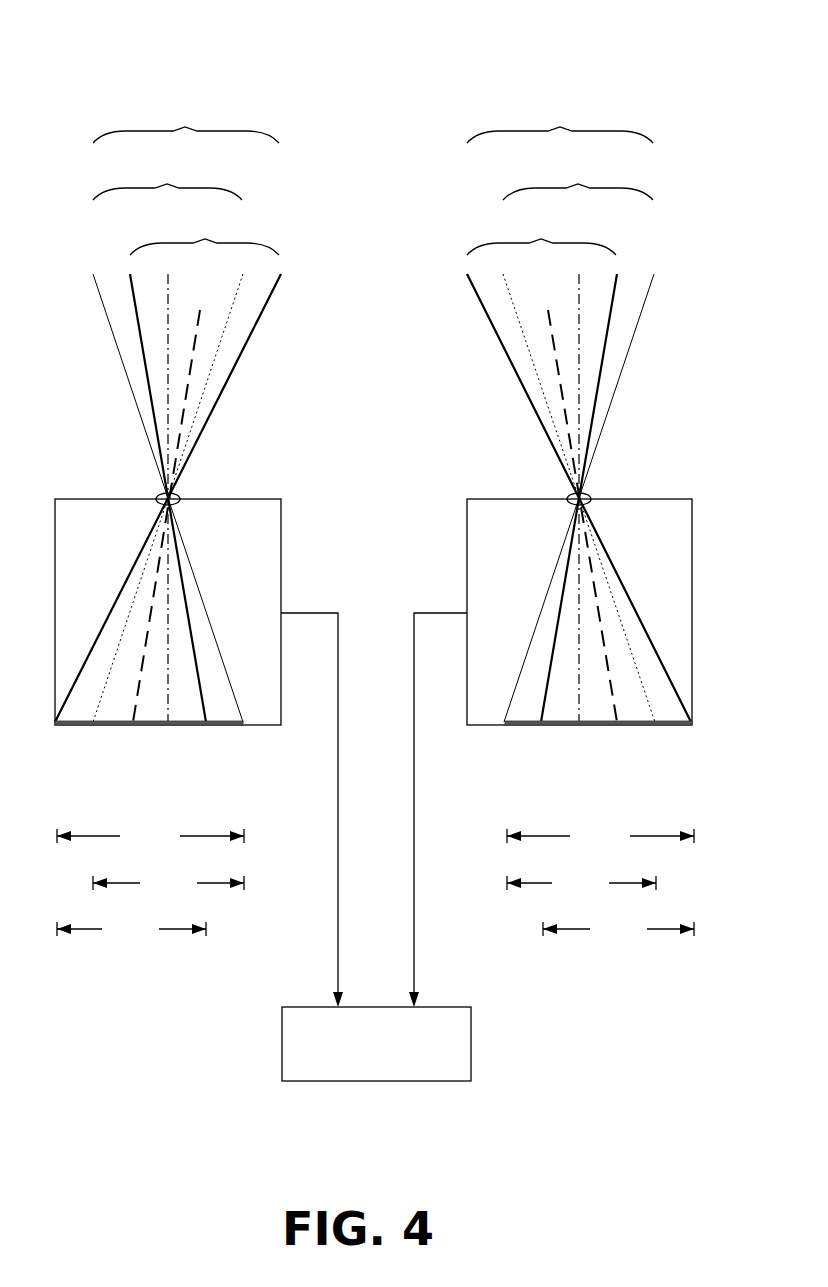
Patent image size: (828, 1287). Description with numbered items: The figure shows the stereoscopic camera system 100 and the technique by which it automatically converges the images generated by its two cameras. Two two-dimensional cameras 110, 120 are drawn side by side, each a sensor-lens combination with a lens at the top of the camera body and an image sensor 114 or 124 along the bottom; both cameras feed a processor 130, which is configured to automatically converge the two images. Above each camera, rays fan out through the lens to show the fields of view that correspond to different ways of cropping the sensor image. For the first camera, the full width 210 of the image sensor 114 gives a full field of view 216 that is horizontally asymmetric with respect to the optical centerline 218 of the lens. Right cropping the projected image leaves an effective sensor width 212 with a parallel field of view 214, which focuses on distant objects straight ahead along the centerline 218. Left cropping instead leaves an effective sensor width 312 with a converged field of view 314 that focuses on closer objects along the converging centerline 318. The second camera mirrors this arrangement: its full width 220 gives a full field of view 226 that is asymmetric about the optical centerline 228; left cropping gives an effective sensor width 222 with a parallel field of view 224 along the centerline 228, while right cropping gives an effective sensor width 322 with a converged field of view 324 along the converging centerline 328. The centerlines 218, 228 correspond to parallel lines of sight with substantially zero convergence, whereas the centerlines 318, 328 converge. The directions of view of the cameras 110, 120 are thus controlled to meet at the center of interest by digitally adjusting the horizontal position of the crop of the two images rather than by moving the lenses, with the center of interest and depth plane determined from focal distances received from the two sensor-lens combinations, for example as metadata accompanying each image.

The stereoscopic camera system 100 is at (396, 47).
The 2-D camera 110 is at (76, 528).
The image sensor 114 is at (144, 748).
The 2-D camera 120 is at (488, 528).
The image sensor 124 is at (604, 749).
The processor 130 is at (360, 1056).
The full width 210 is at (150, 836).
The effective sensor width 212 is at (168, 883).
The parallel field of view 214 is at (168, 439).
The full field of view 216 is at (168, 410).
The optical centerline 218 is at (168, 498).
The full width 220 is at (600, 836).
The effective sensor width 222 is at (581, 883).
The parallel field of view 224 is at (579, 439).
The full field of view 226 is at (579, 410).
The optical centerline 228 is at (578, 498).
The effective sensor width 312 is at (131, 929).
The converged field of view 314 is at (204, 467).
The converging centerline 318 is at (179, 497).
The effective sensor width 322 is at (618, 929).
The converged field of view 324 is at (542, 467).
The converging centerline 328 is at (570, 497).